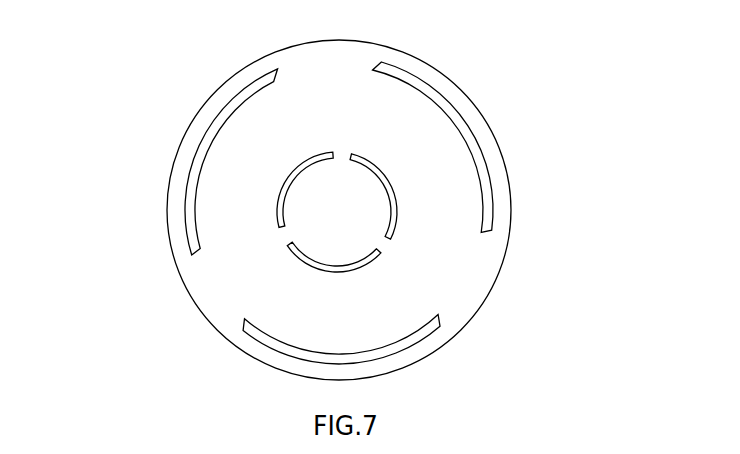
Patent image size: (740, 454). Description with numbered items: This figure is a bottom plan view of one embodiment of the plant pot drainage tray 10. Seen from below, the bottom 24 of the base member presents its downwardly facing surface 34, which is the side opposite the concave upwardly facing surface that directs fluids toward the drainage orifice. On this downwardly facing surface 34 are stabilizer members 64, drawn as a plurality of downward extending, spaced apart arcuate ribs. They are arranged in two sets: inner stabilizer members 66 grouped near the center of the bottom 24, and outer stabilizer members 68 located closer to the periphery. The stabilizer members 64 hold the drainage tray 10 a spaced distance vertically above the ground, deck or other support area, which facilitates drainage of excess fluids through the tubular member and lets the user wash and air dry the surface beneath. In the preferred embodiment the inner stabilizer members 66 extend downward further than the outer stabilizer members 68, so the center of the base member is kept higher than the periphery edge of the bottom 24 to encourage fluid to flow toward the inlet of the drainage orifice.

The drainage tray 10 is at (550, 138).
The bottom 24 is at (215, 90).
The downwardly facing surface 34 is at (475, 282).
The stabilizer members 64 is at (432, 335).
The inner stabilizer members 66 is at (278, 198).
The outer stabilizer members 68 is at (445, 110).